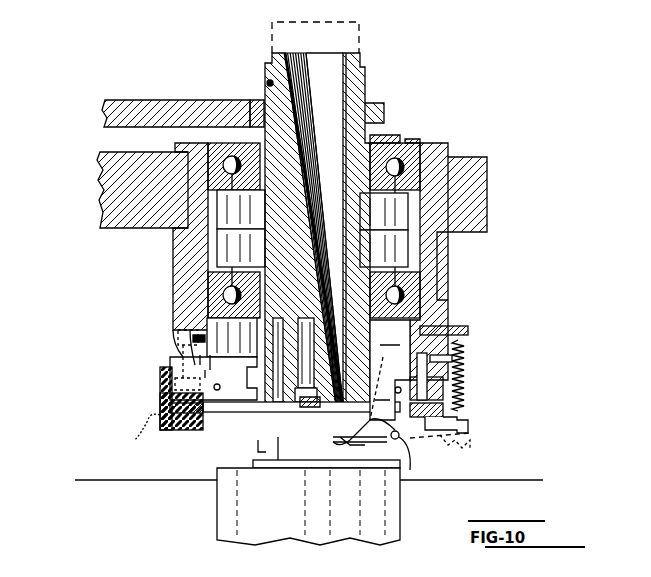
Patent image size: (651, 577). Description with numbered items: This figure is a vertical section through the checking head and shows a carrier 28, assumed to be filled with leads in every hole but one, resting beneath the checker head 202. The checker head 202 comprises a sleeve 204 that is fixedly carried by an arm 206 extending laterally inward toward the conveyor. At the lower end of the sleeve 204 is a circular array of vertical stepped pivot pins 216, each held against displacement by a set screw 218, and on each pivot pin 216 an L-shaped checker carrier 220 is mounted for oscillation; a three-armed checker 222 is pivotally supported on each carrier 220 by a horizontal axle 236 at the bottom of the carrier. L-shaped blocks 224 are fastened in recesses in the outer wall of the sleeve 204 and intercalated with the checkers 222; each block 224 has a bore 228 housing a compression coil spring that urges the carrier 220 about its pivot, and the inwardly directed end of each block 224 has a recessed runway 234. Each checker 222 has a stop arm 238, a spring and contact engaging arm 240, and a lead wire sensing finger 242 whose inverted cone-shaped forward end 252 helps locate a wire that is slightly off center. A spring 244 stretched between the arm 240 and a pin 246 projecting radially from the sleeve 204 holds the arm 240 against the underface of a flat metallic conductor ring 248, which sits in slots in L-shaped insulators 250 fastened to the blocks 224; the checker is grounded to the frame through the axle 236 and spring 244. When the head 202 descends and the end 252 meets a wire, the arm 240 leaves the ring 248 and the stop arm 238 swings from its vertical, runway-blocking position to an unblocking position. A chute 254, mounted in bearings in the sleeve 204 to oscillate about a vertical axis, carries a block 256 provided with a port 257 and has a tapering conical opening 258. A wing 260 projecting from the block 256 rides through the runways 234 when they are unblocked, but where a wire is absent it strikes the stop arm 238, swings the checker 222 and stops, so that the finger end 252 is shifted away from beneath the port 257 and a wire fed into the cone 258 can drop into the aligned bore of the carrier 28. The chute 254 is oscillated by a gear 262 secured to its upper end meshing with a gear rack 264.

The carrier 28 is at (420, 502).
The checker head 202 is at (480, 270).
The sleeve 204 is at (437, 243).
The arm 206 is at (100, 184).
The pivot pin 216 is at (443, 390).
The set screw 218 is at (466, 368).
The checker carrier 220 is at (412, 442).
The checker 222 is at (478, 447).
The block 224 is at (178, 350).
The bore 228 is at (217, 384).
The runway 234 is at (248, 395).
The axle 236 is at (417, 459).
The stop arm 238 is at (390, 370).
The spring and contact engaging arm 240 is at (468, 428).
The lead wire sensing finger 242 is at (393, 439).
The spring 244 is at (465, 356).
The pin 246 is at (470, 333).
The conductor ring 248 is at (443, 410).
The insulator 250 is at (160, 397).
The cone shaped forward end 252 is at (336, 442).
The chute 254 is at (300, 170).
The block 256 is at (290, 395).
The port 257 is at (340, 400).
The conical opening 258 is at (346, 97).
The wing 260 is at (355, 442).
The gear 262 is at (384, 118).
The gear rack 264 is at (165, 110).